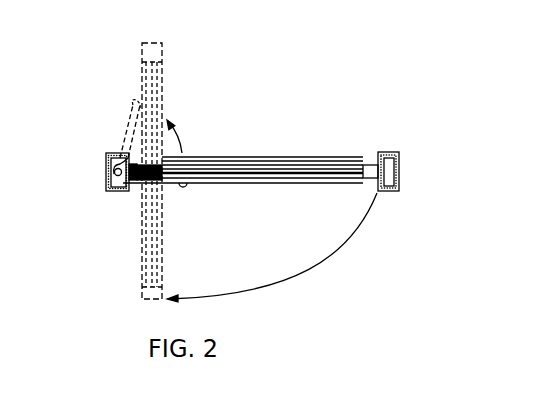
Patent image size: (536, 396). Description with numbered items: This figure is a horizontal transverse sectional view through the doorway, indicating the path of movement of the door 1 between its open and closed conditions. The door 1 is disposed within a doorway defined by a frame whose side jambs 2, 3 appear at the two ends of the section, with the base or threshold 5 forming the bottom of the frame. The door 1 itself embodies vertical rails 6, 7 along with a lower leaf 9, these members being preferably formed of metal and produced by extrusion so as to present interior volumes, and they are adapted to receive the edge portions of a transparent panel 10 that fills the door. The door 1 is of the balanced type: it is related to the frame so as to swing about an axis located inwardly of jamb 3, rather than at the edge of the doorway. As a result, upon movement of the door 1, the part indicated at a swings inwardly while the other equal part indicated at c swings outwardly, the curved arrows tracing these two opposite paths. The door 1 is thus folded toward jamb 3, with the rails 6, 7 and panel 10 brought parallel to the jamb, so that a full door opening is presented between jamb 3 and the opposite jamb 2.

The door 1 is at (287, 123).
The side jamb 2 is at (399, 173).
The side jamb 3 is at (106, 178).
The base or threshold 5 is at (346, 160).
The vertical rail 6 is at (370, 158).
The vertical rail 7 is at (140, 188).
The lower leaf 9 is at (261, 165).
The transparent panel 10 is at (229, 163).
The inwardly swinging part of door a is at (162, 63).
The outwardly swinging part of door c is at (143, 275).